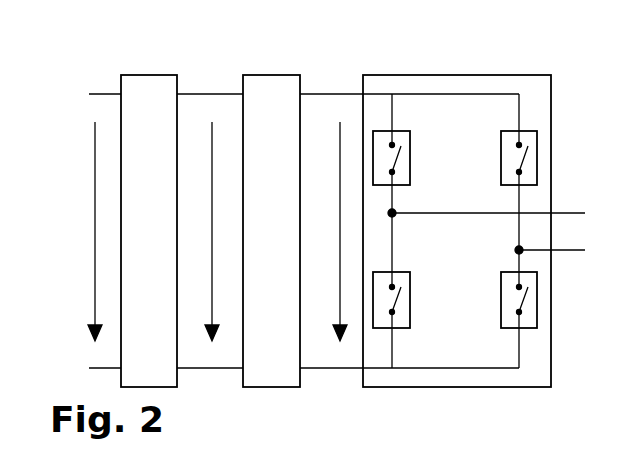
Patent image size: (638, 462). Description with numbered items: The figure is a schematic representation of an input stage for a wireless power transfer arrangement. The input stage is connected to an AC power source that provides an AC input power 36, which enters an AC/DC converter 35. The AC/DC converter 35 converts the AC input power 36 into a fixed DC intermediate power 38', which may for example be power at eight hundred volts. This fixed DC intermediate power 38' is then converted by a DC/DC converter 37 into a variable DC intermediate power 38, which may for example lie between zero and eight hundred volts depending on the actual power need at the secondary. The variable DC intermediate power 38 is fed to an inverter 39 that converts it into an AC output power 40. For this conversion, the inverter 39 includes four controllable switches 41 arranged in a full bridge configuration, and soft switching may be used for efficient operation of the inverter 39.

The AC/DC converter 35 is at (149, 231).
The AC input power 36 is at (95, 222).
The DC/DC converter 37 is at (271, 231).
The variable DC intermediate power 38 is at (327, 189).
The fixed DC intermediate power 38' is at (199, 189).
The inverter 39 is at (447, 75).
The AC output power 40 is at (497, 231).
The controllable switches 41 is at (501, 153).